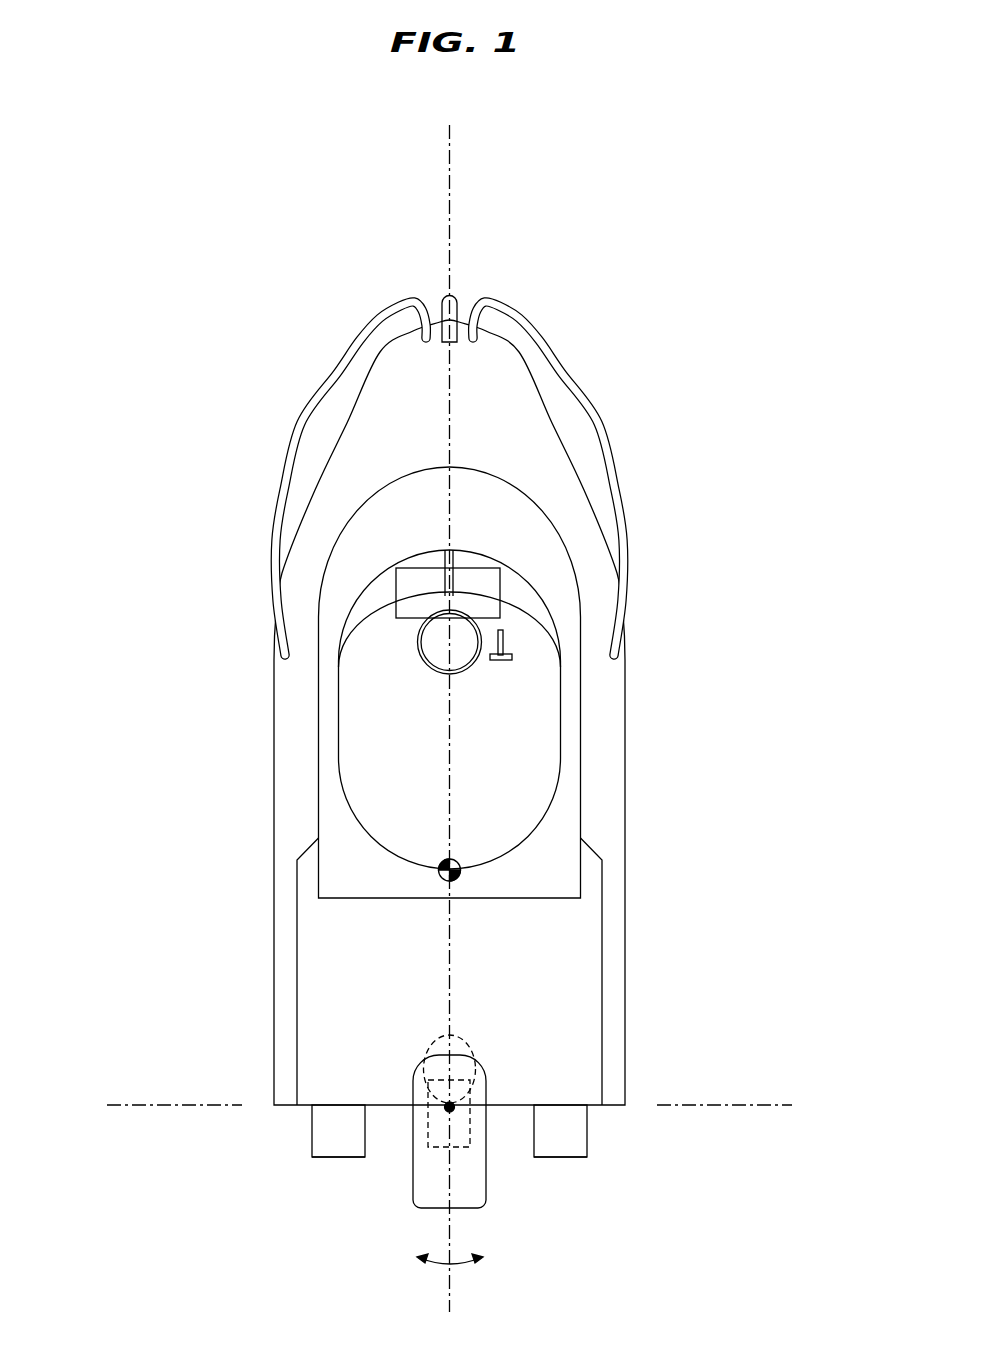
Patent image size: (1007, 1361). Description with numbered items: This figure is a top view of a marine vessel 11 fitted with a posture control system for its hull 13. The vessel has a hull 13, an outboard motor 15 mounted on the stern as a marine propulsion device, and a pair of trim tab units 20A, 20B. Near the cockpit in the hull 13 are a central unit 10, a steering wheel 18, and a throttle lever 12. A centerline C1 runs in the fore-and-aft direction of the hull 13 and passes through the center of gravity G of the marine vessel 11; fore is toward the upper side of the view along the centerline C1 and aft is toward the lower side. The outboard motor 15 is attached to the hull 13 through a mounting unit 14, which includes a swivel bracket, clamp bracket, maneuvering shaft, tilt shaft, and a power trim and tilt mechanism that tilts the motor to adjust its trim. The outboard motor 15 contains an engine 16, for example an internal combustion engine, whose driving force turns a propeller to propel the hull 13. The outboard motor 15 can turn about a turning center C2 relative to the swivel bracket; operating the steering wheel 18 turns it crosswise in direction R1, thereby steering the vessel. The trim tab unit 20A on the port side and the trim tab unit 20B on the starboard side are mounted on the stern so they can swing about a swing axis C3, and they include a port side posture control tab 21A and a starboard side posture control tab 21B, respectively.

The central unit 10 is at (500, 587).
The marine vessel 11 is at (300, 363).
The throttle lever 12 is at (503, 660).
The hull 13 is at (258, 813).
The mounting unit 14 is at (463, 1040).
The outboard motor 15 is at (472, 1210).
The engine 16 is at (460, 1150).
The steering wheel 18 is at (430, 667).
The trim tab unit 20A is at (318, 1163).
The trim tab unit 20B is at (581, 1163).
The tab 21A is at (312, 1136).
The tab 21B is at (587, 1136).
The centerline C1 is at (457, 198).
The turning center C2 is at (446, 1109).
The swing axis C3 is at (450, 1105).
The center of gravity G is at (440, 857).
The direction R1 is at (454, 1276).